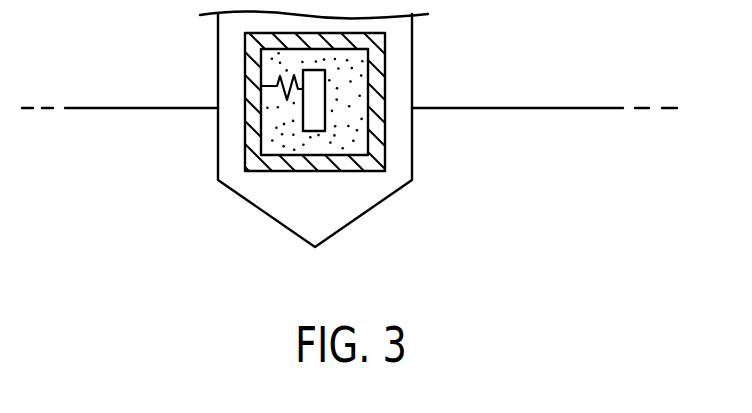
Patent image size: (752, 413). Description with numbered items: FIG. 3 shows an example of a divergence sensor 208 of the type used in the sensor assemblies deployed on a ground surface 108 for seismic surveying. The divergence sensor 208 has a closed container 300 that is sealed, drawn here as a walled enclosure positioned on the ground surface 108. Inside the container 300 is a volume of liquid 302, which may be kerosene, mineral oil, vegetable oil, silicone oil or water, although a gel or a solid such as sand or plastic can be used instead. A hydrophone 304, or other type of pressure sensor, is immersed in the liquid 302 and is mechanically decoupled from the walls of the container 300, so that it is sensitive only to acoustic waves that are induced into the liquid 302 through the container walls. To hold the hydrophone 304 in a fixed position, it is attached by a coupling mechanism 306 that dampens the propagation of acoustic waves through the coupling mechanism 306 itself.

The ground surface 108 is at (517, 108).
The divergence sensor 208 is at (387, 127).
The closed container 300 is at (386, 56).
The liquid 302 is at (333, 150).
The hydrophone 304 is at (314, 131).
The coupling mechanism 306 is at (265, 83).